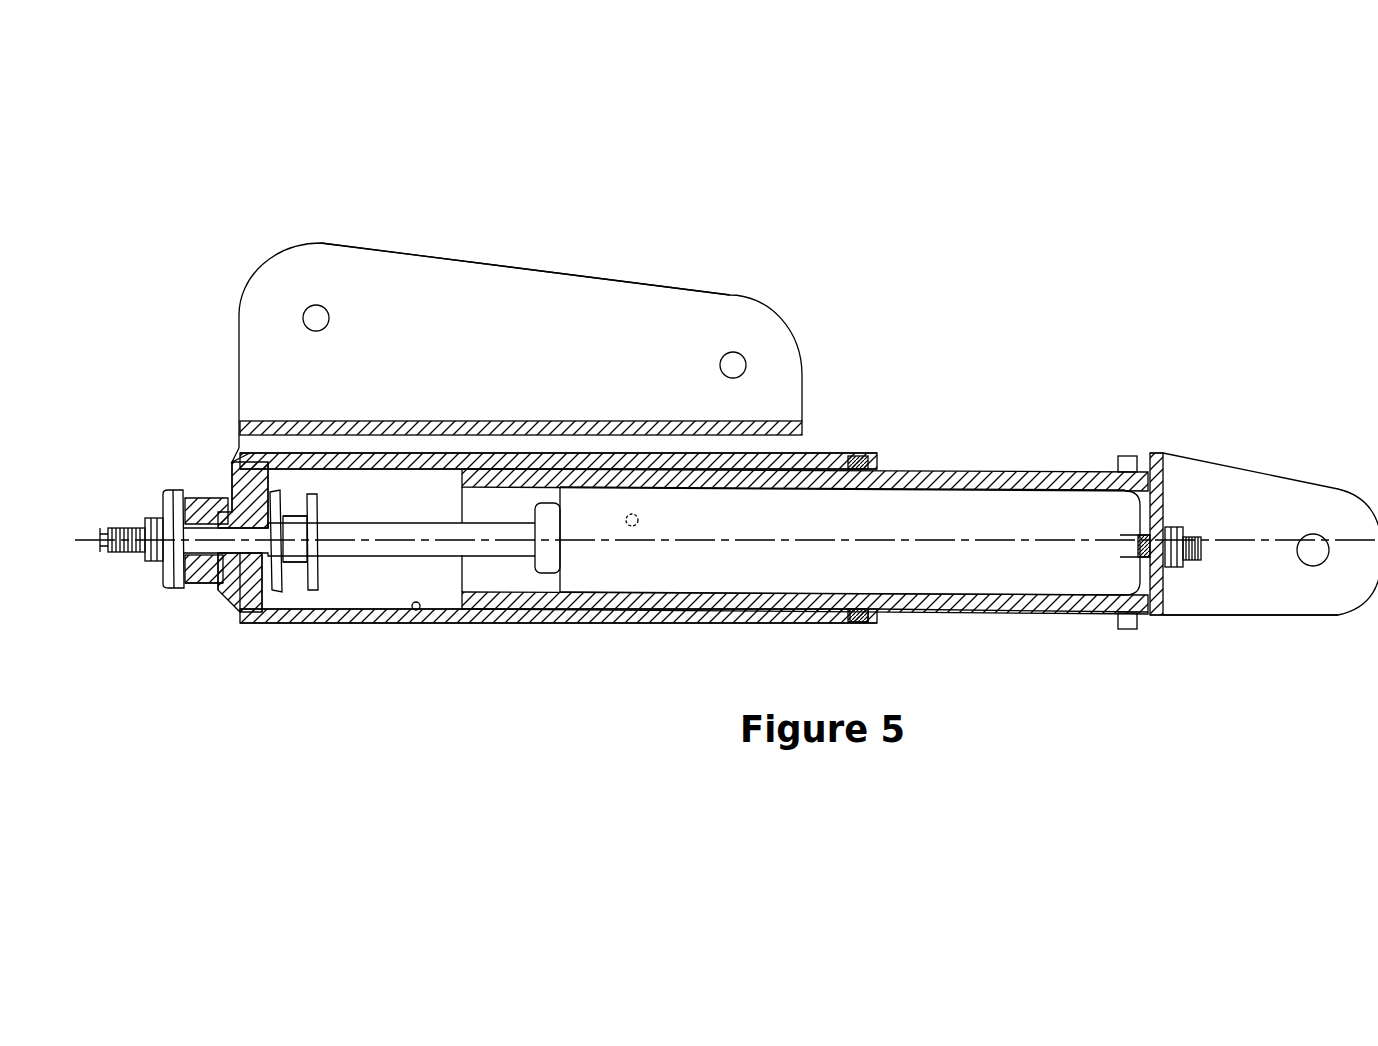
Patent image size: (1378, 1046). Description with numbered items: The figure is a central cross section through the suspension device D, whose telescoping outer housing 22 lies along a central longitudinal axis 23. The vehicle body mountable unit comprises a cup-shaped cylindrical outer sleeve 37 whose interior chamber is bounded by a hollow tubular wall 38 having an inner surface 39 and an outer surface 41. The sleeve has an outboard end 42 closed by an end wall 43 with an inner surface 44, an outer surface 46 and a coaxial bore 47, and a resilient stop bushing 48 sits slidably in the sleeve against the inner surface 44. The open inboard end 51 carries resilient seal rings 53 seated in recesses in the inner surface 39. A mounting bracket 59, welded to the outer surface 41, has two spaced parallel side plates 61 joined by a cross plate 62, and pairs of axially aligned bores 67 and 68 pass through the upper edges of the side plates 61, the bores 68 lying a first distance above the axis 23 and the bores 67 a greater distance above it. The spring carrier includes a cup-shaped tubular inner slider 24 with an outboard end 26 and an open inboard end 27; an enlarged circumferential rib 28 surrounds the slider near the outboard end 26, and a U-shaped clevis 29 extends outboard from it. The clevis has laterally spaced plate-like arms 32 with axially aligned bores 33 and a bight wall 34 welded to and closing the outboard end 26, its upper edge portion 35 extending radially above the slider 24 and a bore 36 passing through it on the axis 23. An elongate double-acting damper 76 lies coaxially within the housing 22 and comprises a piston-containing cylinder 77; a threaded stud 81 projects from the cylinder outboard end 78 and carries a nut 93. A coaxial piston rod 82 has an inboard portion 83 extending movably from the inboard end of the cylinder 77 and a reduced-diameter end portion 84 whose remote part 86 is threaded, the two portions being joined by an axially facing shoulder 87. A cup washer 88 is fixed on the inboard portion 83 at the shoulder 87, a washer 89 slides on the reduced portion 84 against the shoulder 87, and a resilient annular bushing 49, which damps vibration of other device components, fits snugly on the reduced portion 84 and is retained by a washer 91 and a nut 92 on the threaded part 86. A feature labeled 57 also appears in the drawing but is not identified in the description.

The suspension device D is at (729, 173).
The telescoping outer housing 22 is at (1042, 283).
The central longitudinal axis 23 is at (1028, 545).
The tubular inner slider 24 is at (922, 474).
The outboard end 26 is at (1140, 624).
The open inboard end 27 is at (668, 622).
The circumferential rib 28 is at (1124, 629).
The U-shaped clevis 29 is at (1328, 621).
The plate-like arms 32 is at (1284, 612).
The bores 33 is at (1313, 536).
The bight wall 34 is at (1170, 464).
The upper edge portion 35 is at (1154, 453).
The bore 36 is at (1141, 546).
The outer sleeve 37 is at (583, 628).
The tubular wall 38 is at (377, 612).
The inner surface 39 is at (416, 612).
The outer surface 41 is at (556, 624).
The outboard end 42 is at (224, 612).
The end wall 43 is at (230, 466).
The inner surface 44 is at (242, 448).
The outer surface 46 is at (222, 607).
The coaxial bore 47 is at (202, 518).
The stop bushing 48 is at (236, 622).
The resilient annular bushing 49 is at (200, 584).
The open inboard end 51 is at (870, 622).
The seal ring 53 is at (762, 455).
The fluid port 57 is at (632, 526).
The mounting bracket 59 is at (485, 270).
The side plates 61 is at (394, 276).
The cross plate 62 is at (643, 421).
The bores 67 is at (316, 310).
The bores 68 is at (742, 356).
The damper 76 is at (962, 522).
The cylinder 77 is at (900, 576).
The cylinder outboard end 78 is at (1140, 582).
The threaded stud 81 is at (1202, 550).
The piston rod 82 is at (510, 548).
The inboard portion 83 is at (762, 460).
The reduced diameter end portion 84 is at (240, 592).
The threaded portion 86 is at (160, 538).
The shoulder 87 is at (272, 492).
The cup washer 88 is at (313, 592).
The washer 89 is at (278, 592).
The washer 91 is at (186, 520).
The nut 92 is at (148, 556).
The nut 93 is at (1190, 530).